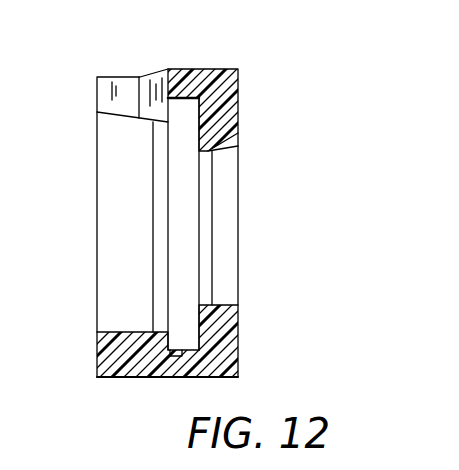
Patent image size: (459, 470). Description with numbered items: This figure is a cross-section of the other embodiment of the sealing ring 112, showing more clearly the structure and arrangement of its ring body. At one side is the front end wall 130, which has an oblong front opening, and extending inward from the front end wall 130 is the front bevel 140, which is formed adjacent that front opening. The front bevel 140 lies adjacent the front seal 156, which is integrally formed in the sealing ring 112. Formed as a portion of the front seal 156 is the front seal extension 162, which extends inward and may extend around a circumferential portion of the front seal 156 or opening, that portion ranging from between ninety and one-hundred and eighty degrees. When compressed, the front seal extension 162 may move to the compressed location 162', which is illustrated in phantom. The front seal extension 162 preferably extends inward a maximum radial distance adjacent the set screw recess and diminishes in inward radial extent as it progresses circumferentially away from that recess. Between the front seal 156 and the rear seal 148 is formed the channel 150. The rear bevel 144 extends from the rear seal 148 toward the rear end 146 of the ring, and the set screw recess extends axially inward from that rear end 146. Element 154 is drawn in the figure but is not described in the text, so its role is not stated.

The sealing ring 112 is at (195, 51).
The front end wall 130 is at (238, 103).
The front seal extension compressed location 162' is at (272, 130).
The front seal extension 162 is at (270, 225).
The front seal 156 is at (212, 232).
The front bevel 140 is at (214, 310).
The notch 154 is at (178, 350).
The channel 150 is at (166, 346).
The rear seal 148 is at (162, 326).
The rear end 146 is at (97, 100).
The rear bevel 144 is at (130, 120).